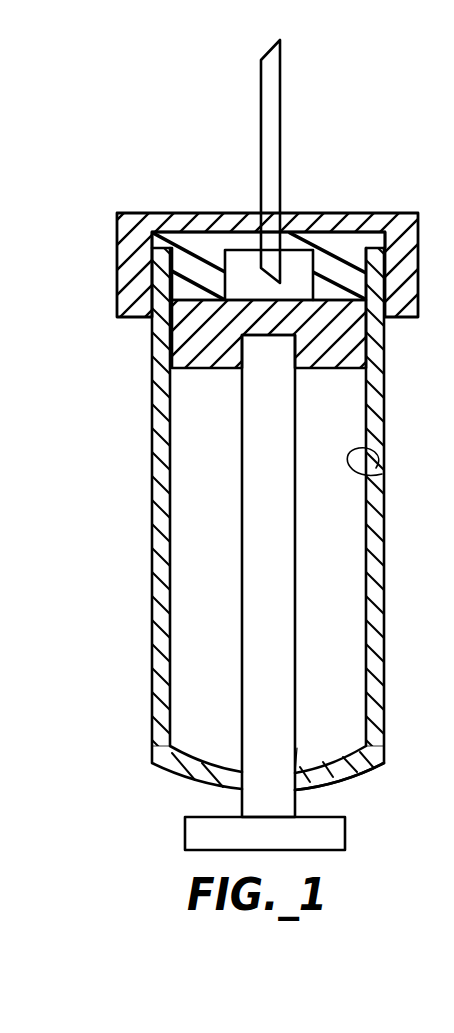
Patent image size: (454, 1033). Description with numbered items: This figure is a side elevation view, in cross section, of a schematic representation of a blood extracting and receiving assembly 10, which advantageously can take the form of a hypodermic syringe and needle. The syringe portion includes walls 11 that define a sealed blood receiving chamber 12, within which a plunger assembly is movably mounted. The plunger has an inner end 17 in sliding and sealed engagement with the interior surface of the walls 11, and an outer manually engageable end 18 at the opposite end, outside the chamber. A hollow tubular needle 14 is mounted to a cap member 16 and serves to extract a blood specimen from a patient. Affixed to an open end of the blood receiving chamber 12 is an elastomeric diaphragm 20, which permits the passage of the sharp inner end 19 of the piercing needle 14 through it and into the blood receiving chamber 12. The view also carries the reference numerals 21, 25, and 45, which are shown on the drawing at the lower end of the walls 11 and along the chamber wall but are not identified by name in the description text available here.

The blood extracting and receiving assembly 10 is at (328, 150).
The walls 11 is at (383, 642).
The blood receiving chamber 12 is at (285, 282).
The hollow tubular needle 14 is at (280, 83).
The cap member 16 is at (181, 213).
The inner end 17 is at (220, 370).
The outer manually engageable end 18 is at (345, 822).
The sharp inner end 19 is at (260, 283).
The elastomeric diaphragm 20 is at (333, 240).
The seal 21 is at (297, 748).
The barrel wall 25 is at (382, 474).
The barrel bottom 45 is at (330, 783).